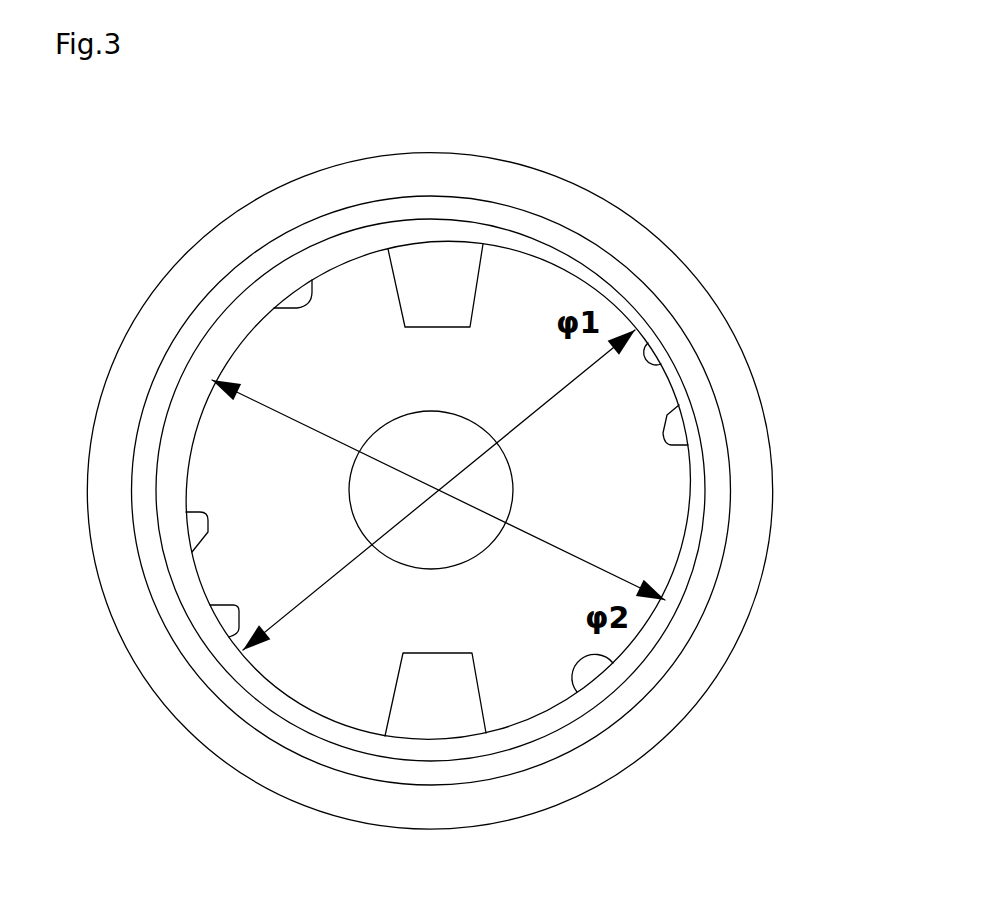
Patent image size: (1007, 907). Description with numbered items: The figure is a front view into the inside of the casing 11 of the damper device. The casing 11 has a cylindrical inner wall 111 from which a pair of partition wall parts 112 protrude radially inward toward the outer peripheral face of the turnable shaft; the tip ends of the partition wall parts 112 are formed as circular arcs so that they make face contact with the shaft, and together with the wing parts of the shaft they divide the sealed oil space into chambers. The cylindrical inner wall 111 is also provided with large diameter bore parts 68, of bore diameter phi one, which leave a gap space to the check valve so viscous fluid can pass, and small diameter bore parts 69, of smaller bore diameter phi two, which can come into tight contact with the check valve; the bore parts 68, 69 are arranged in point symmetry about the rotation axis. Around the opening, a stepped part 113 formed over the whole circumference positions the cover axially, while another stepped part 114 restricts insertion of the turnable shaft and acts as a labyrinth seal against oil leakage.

The casing 11 is at (662, 150).
The large diameter bore part 68 is at (658, 348).
The small diameter bore part 69 is at (274, 308).
The cylindrical inner wall 111 is at (663, 420).
The partition wall part 112 is at (445, 308).
The stepped part 113 is at (620, 278).
The stepped part 114 is at (532, 725).